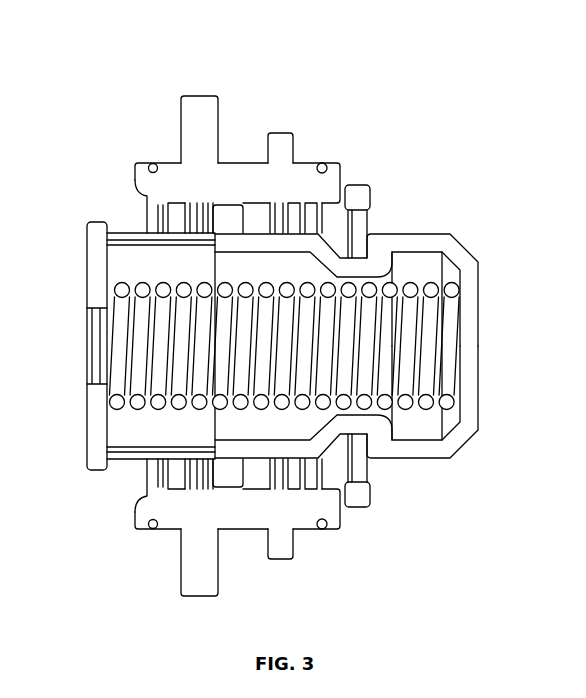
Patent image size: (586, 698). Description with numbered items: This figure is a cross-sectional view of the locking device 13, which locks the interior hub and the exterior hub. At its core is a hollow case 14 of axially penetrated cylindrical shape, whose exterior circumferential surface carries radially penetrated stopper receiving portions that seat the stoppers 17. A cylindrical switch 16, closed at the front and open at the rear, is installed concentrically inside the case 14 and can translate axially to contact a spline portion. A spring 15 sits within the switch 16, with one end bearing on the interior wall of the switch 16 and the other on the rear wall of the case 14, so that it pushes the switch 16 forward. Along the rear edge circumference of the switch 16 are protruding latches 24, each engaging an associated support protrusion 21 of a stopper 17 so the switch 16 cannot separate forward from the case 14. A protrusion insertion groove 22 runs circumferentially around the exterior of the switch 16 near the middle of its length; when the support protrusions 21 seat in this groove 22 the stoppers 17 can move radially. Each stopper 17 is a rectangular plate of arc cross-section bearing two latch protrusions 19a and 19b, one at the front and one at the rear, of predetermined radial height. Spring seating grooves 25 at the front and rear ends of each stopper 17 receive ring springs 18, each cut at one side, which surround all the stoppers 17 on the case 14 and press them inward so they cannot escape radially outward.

The locking device 13 is at (364, 145).
The hollow case 14 is at (96, 243).
The spring 15 is at (450, 283).
The switch 16 is at (468, 332).
The stopper 17 is at (240, 178).
The ring spring 18 is at (322, 163).
The latch protrusion 19a is at (280, 141).
The latch protrusion 19b is at (198, 105).
The support protrusion 21 is at (343, 230).
The protrusion insertion groove 22 is at (357, 432).
The protruding latch 24 is at (228, 222).
The spring seating groove 25 is at (338, 165).